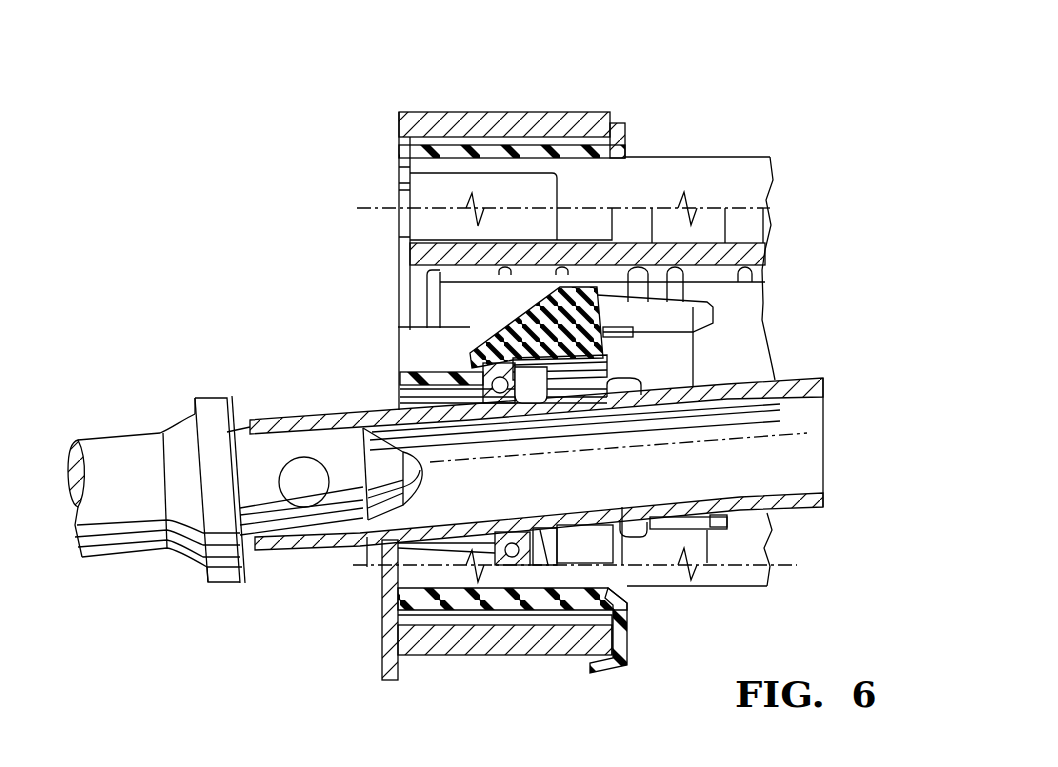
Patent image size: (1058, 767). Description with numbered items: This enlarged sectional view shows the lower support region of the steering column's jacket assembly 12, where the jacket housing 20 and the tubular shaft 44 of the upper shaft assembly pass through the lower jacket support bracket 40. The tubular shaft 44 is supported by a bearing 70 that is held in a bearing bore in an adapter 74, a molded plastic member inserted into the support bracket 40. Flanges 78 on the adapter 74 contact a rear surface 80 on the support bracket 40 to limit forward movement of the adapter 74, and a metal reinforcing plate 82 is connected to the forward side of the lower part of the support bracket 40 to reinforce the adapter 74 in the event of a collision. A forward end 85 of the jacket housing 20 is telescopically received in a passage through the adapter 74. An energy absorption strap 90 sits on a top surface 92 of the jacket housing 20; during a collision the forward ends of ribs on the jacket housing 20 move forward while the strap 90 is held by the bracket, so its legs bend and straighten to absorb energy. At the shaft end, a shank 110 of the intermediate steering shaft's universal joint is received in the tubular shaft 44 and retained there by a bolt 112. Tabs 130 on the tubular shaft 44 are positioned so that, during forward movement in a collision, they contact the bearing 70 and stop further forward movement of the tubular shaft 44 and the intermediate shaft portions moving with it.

The jacket assembly 12 is at (738, 588).
The jacket housing 20 is at (762, 265).
The lower jacket support bracket 40 is at (540, 656).
The tubular shaft 44 is at (790, 380).
The bearing 70 is at (455, 402).
The adapter 74 is at (400, 152).
The flanges 78 is at (628, 622).
The rear surface 80 is at (613, 125).
The metal reinforcing plate 82 is at (383, 668).
The forward end 85 is at (408, 278).
The energy absorption strap 90 is at (722, 157).
The top surface 92 is at (755, 243).
The shank 110 is at (377, 430).
The bolt 112 is at (303, 495).
The tabs 130 is at (650, 538).